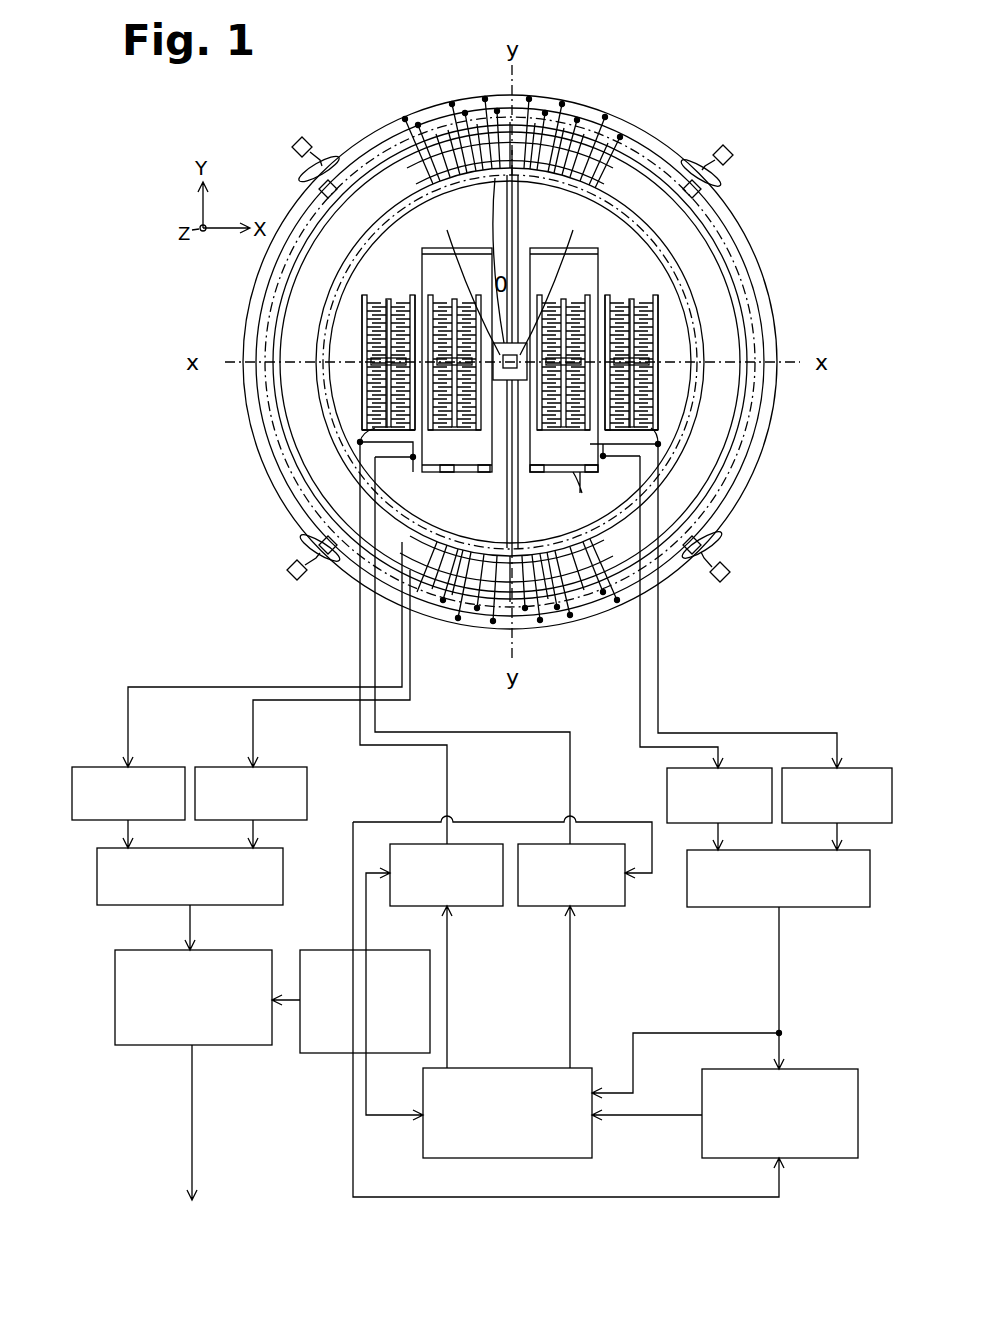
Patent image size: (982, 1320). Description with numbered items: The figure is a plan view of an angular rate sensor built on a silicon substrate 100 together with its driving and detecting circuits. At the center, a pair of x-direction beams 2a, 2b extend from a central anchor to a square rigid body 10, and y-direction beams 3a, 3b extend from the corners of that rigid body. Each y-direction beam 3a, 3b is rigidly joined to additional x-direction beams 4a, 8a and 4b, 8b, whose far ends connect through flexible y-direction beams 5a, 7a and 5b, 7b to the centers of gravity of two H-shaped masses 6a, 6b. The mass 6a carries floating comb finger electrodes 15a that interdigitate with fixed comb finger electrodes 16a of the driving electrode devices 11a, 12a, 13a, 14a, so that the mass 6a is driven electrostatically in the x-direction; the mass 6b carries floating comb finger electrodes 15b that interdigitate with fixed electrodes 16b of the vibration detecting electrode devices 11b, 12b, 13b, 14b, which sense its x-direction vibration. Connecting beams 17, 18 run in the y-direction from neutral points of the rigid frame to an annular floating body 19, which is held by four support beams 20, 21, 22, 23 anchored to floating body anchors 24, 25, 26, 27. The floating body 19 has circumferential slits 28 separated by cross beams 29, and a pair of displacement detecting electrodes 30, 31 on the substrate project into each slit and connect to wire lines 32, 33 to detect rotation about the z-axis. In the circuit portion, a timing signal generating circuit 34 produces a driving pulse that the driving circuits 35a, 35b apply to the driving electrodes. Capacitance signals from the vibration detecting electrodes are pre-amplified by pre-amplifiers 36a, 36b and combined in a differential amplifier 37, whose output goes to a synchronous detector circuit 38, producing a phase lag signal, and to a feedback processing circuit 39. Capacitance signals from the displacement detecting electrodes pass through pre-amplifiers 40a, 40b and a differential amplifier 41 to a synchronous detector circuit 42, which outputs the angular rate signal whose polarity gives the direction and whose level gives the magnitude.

The silicon substrate 100 is at (335, 397).
The x-direction beam 2a is at (486, 472).
The x-direction beam 2b is at (598, 472).
The y-direction beam 3a is at (451, 472).
The y-direction beam 3b is at (540, 472).
The x-direction beam 4a is at (471, 247).
The x-direction beam 4b is at (576, 248).
The y-direction beam 5a is at (430, 294).
The y-direction beam 5b is at (592, 294).
The H-shaped mass 6a is at (362, 318).
The H-shaped mass 6b is at (658, 318).
The y-direction beam 7a is at (374, 458).
The y-direction beam 7b is at (642, 457).
The x-direction beam 8a is at (411, 460).
The x-direction beam 8b is at (578, 473).
The rigid body 10 is at (545, 513).
The driving electrode device 11a is at (362, 346).
The vibration detecting electrode device 11b is at (658, 346).
The driving electrode device 12a is at (390, 318).
The vibration detecting electrode device 12b is at (630, 310).
The driving electrode 13a is at (438, 180).
The vibration detecting electrode 13b is at (582, 180).
The driving electrode 14a is at (407, 117).
The vibration detecting electrode 14b is at (561, 103).
The floating comb finger electrode 15a is at (366, 433).
The floating comb finger electrode 15b is at (652, 433).
The fixed comb finger electrode 16a is at (372, 294).
The fixed comb finger electrode 16b is at (652, 296).
The connecting beam 17 is at (507, 178).
The connecting beam 18 is at (590, 596).
The floating body 19 is at (497, 170).
The support beam 20 is at (302, 542).
The support beam 21 is at (320, 162).
The support beam 22 is at (722, 184).
The support beam 23 is at (720, 536).
The floating body anchor 24 is at (288, 572).
The floating body anchor 25 is at (296, 143).
The floating body anchor 26 is at (733, 153).
The floating body anchor 27 is at (730, 572).
The slit 28 is at (427, 643).
The cross beam 29 is at (478, 612).
The displacement detecting electrode 30 is at (445, 604).
The displacement detecting electrode 31 is at (459, 622).
The wire line 32 is at (527, 612).
The wire line 33 is at (559, 611).
The timing signal generating circuit 34 is at (407, 930).
The driving circuit 35a is at (597, 907).
The driving circuit 35b is at (478, 907).
The pre-amplifier 36a is at (668, 783).
The pre-amplifier 36b is at (860, 768).
The differential amplifier 37 is at (830, 907).
The synchronous detector circuit 38 is at (808, 1069).
The feedback processing circuit 39 is at (583, 1068).
The pre-amplifier 40a is at (222, 767).
The pre-amplifier 40b is at (100, 767).
The differential amplifier 41 is at (285, 872).
The synchronous detector circuit 42 is at (248, 950).